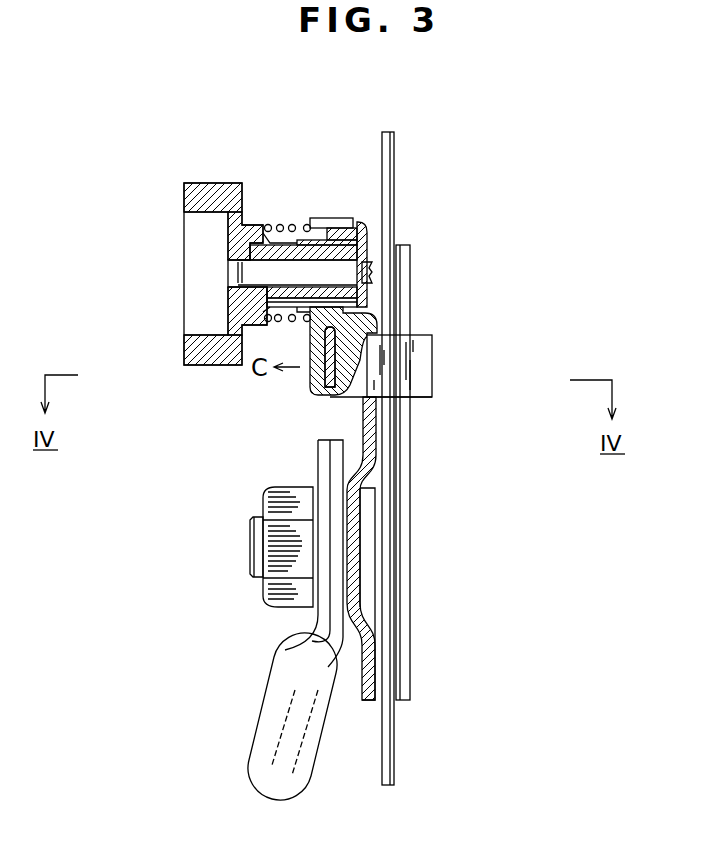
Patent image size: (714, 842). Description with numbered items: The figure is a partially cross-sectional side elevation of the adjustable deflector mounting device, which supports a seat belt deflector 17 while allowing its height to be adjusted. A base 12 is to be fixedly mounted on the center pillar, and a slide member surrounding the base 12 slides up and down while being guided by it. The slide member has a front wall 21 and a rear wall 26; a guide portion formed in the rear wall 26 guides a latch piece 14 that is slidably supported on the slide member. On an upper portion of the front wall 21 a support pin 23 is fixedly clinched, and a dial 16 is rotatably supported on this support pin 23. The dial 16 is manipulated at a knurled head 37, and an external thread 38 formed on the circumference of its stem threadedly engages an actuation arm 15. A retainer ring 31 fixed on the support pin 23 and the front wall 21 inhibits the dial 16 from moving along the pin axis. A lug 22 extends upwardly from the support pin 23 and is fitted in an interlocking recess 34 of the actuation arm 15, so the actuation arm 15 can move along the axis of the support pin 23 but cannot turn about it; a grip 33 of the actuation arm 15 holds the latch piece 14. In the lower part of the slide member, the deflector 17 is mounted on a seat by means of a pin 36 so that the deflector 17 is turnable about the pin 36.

The base 12 is at (387, 155).
The latch piece 14 is at (413, 367).
The actuation arm 15 is at (352, 305).
The dial 16 is at (184, 200).
The deflector 17 is at (267, 703).
The front wall 21 is at (367, 230).
The lug 22 is at (335, 218).
The support pin 23 is at (345, 275).
The rear wall 26 is at (402, 325).
The retainer ring 31 is at (220, 257).
The grip 33 is at (313, 386).
The interlocking recess 34 is at (304, 237).
The pin 36 is at (247, 547).
The head 37 is at (198, 183).
The external thread 38 is at (270, 243).